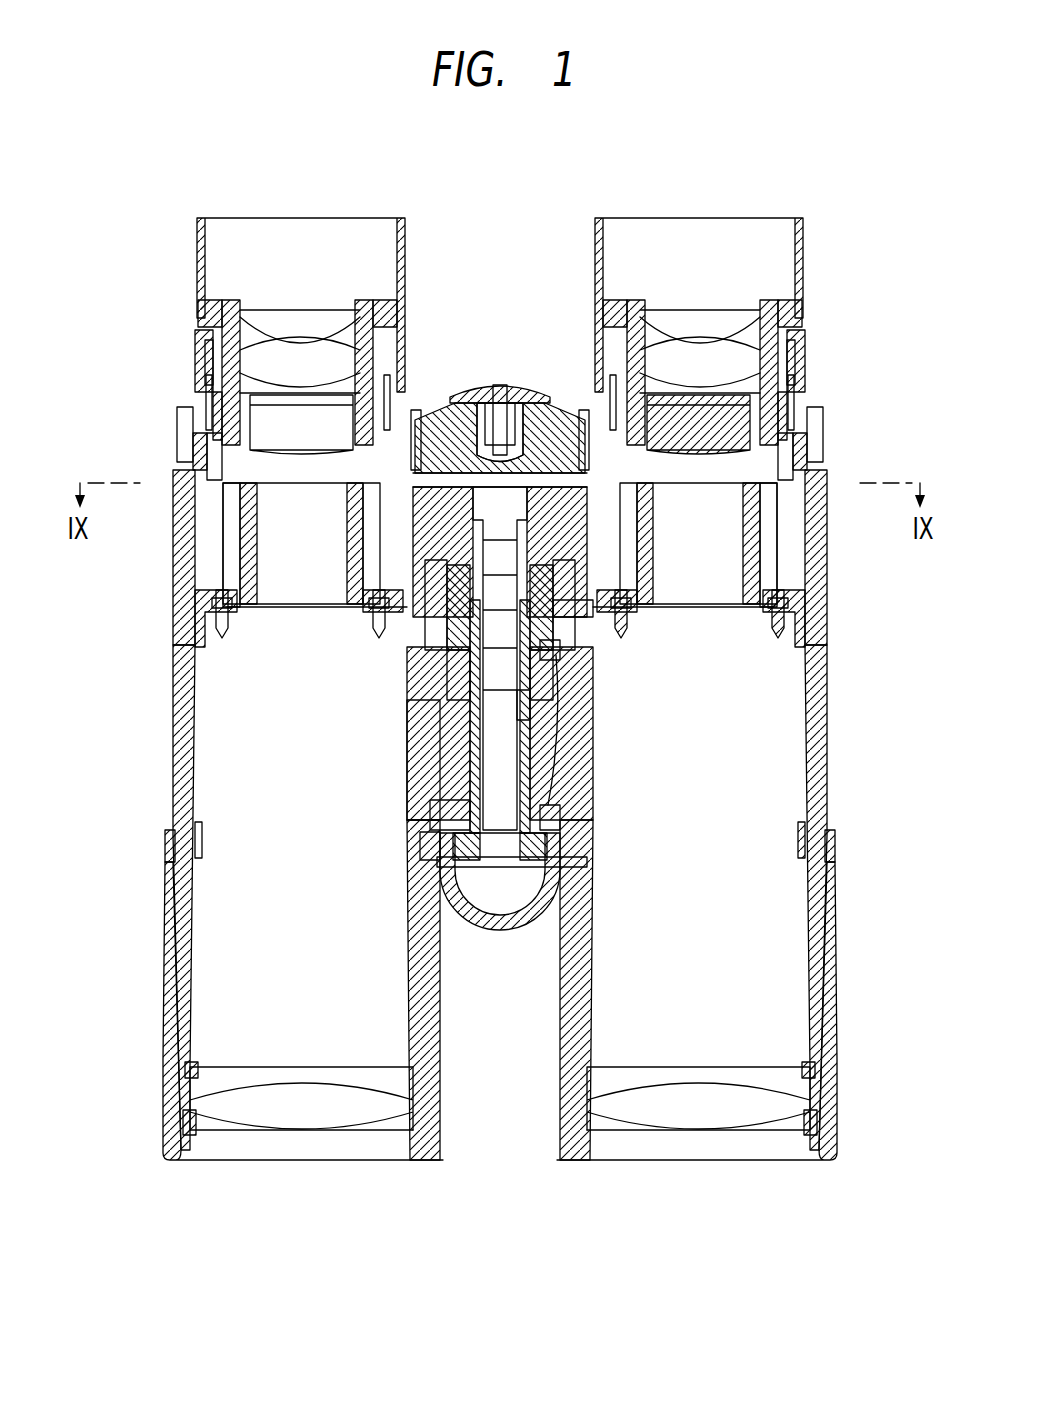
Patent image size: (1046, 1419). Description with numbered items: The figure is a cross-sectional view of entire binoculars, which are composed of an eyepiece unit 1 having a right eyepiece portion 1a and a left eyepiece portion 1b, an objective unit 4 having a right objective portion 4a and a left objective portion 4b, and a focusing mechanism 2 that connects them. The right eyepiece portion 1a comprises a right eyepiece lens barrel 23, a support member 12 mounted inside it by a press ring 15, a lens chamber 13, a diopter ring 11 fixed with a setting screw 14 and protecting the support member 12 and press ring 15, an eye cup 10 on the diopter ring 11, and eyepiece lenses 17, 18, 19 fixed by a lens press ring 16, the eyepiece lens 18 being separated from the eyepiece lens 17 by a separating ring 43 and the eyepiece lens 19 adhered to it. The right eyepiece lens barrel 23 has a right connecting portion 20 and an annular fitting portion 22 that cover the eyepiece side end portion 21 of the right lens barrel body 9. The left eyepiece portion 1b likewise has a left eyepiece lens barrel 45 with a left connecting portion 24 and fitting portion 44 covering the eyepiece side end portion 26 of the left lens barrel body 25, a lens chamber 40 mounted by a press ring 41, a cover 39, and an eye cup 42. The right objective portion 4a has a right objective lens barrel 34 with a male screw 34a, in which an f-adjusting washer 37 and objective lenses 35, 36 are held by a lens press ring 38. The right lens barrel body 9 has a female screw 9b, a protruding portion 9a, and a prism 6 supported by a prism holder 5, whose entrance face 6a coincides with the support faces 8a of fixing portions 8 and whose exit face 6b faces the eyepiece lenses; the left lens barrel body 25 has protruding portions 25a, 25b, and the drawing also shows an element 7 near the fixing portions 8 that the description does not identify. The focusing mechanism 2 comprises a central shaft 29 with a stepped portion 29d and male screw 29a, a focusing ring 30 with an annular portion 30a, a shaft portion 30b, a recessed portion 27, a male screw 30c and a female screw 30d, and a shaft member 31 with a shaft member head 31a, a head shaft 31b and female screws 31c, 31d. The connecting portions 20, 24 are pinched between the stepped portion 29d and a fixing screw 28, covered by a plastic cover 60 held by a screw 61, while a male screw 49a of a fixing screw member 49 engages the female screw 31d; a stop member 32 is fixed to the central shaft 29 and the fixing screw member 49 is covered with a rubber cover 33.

The eyepiece unit 1 is at (490, 216).
The right eyepiece portion 1a is at (296, 196).
The left eyepiece portion 1b is at (700, 196).
The focusing mechanism 2 is at (475, 365).
The objective unit 4 is at (500, 1152).
The right objective portion 4a is at (300, 1187).
The left objective portion 4b is at (700, 1187).
The prism holder 5 is at (218, 541).
The prism 6 is at (275, 562).
The entrance face 6a is at (285, 607).
The exit face 6b is at (226, 480).
The screw 7 is at (220, 610).
The fixing portion 8 is at (215, 642).
The support face 8a is at (236, 640).
The right lens barrel body 9 is at (176, 680).
The protruding portion 9a is at (470, 787).
The female screw 9b is at (202, 837).
The eye cup 10 is at (197, 258).
The diopter ring 11 is at (200, 340).
The support member 12 is at (205, 370).
The lens chamber 13 is at (208, 392).
The setting screw 14 is at (224, 300).
The press ring 15 is at (214, 405).
The lens press ring 16 is at (205, 446).
The eyepiece lens 17 is at (288, 345).
The eyepiece lens 18 is at (322, 360).
The eyepiece lens 19 is at (350, 392).
The right connecting portion 20 is at (435, 397).
The eyepiece side end portion 21 is at (195, 458).
The fitting portion 22 is at (178, 470).
The right eyepiece lens barrel 23 is at (340, 462).
The left connecting portion 24 is at (565, 408).
The left lens barrel body 25 is at (812, 635).
The protruding portion 25a is at (580, 715).
The protruding portion 25b is at (560, 810).
The eyepiece side end portion 26 is at (620, 463).
The recessed portion 27 is at (420, 525).
The fixing screw 28 is at (500, 388).
The central shaft 29 is at (640, 560).
The male screw 29a is at (560, 780).
The stepped portion 29d is at (640, 532).
The focusing ring 30 is at (575, 650).
The annular portion 30a is at (440, 542).
The shaft portion 30b is at (465, 702).
The male screw 30c is at (430, 575).
The female screw 30d is at (460, 748).
The shaft member 31 is at (585, 660).
The shaft member head 31a is at (560, 640).
The head shaft 31b is at (522, 700).
The female screw 31c is at (600, 610).
The female screw 31d is at (560, 840).
The stop member 32 is at (450, 805).
The rubber cover 33 is at (502, 925).
The right objective lens barrel 34 is at (175, 957).
The male screw 34a is at (170, 848).
The objective lens 35 is at (195, 1088).
The objective lens 36 is at (215, 1112).
The f-adjusting washer 37 is at (188, 1065).
The lens press ring 38 is at (188, 1120).
The cover 39 is at (805, 352).
The lens chamber 40 is at (792, 366).
The press ring 41 is at (792, 393).
The eye cup 42 is at (803, 262).
The separating ring 43 is at (250, 305).
The fitting portion 44 is at (822, 470).
The left eyepiece lens barrel 45 is at (815, 497).
The fixing screw member 49 is at (548, 905).
The male screw 49a is at (460, 843).
The plastic cover 60 is at (518, 393).
The screw 61 is at (500, 382).